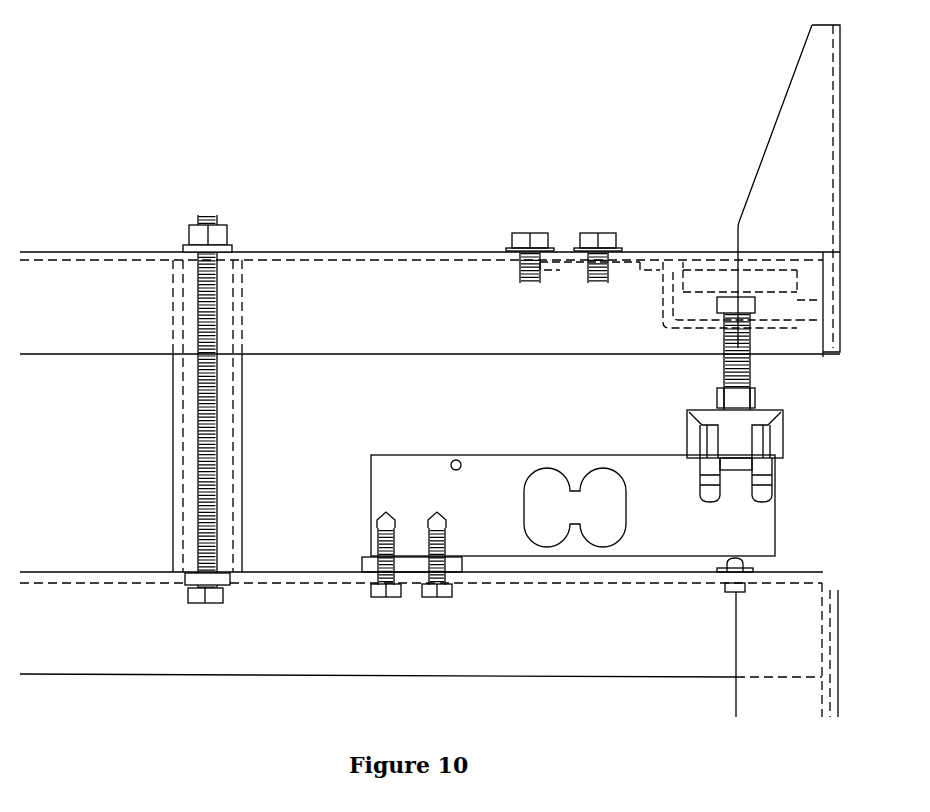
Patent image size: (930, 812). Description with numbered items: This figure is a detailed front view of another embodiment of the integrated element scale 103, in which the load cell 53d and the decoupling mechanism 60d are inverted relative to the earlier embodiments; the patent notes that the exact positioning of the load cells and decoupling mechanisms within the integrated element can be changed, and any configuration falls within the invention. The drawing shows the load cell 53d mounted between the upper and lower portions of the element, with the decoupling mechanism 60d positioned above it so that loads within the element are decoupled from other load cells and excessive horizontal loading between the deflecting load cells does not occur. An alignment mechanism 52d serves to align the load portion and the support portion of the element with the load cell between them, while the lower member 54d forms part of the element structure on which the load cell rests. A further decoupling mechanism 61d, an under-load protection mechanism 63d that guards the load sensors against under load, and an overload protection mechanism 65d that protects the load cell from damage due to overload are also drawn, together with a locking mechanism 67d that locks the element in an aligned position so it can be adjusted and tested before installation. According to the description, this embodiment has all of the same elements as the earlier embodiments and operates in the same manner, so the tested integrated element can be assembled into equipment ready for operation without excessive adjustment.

The integrated element scale 103 is at (463, 212).
The alignment mechanism 52d is at (757, 172).
The load cell 53d is at (393, 455).
The lower beam 54d is at (297, 570).
The decoupling mechanism 60d is at (785, 381).
The decoupling mechanism 61d is at (683, 263).
The under-load protection mechanism 63d is at (663, 327).
The overload protection mechanism 65d is at (743, 565).
The locking mechanism 67d is at (172, 414).